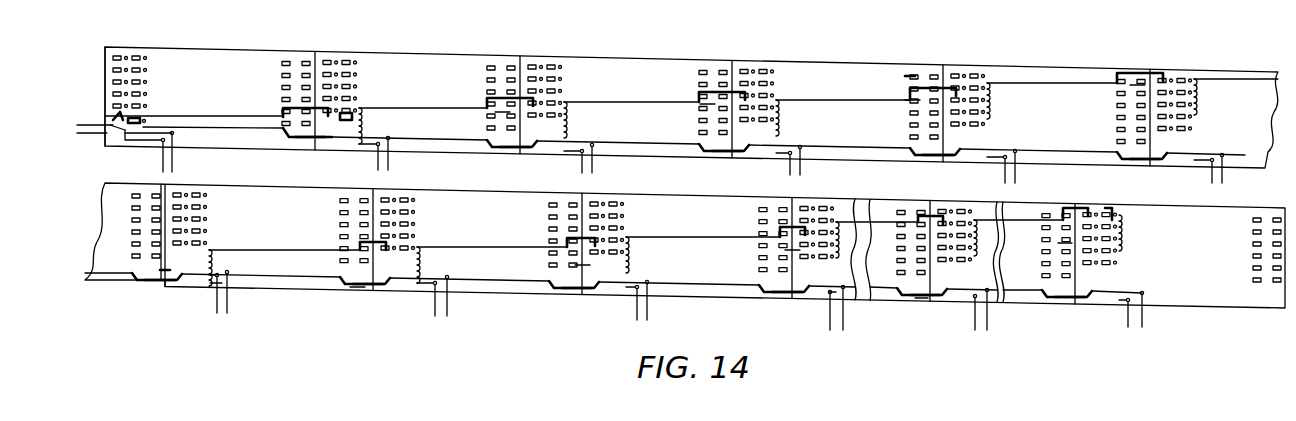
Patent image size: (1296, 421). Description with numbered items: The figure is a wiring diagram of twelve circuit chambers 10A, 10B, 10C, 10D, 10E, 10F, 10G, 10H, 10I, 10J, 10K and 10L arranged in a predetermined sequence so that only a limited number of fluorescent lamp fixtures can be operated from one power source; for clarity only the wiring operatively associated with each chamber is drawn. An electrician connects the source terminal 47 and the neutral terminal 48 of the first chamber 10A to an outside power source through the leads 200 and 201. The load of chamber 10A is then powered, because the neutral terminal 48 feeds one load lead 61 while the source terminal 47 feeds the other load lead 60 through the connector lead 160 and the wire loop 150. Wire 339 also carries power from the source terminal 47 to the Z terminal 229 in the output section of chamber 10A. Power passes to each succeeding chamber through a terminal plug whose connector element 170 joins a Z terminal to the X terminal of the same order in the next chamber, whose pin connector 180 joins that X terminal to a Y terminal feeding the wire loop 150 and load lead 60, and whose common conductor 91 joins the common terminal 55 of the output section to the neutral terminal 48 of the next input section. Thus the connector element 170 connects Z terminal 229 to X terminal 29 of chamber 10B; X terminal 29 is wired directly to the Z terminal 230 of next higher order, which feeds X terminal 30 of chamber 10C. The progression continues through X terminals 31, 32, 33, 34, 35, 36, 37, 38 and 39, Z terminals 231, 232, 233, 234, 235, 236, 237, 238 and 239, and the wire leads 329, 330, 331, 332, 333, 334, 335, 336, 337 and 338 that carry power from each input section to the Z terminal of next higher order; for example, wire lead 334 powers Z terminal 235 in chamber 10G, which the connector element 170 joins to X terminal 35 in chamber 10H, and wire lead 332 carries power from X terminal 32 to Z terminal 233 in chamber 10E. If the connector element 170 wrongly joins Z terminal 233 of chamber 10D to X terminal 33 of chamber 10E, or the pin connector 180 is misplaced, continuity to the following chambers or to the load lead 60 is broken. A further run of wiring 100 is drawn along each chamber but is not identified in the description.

The circuit chamber 10A is at (134, 41).
The circuit chamber 10B is at (340, 46).
The circuit chamber 10C is at (546, 50).
The circuit chamber 10D is at (765, 55).
The circuit chamber 10E is at (978, 59).
The circuit chamber 10F is at (1165, 63).
The circuit chamber 10G is at (181, 294).
The circuit chamber 10H is at (383, 296).
The circuit chamber 10I is at (601, 300).
The circuit chamber 10J is at (935, 308).
The circuit chamber 10K is at (1073, 311).
The circuit chamber 10L is at (1268, 315).
The X terminal 29 is at (283, 129).
The X terminal 30 is at (500, 112).
The X terminal 31 is at (700, 102).
The X terminal 32 is at (908, 100).
The X terminal 33 is at (953, 70).
The X terminal 34 is at (216, 283).
The X terminal 35 is at (355, 287).
The X terminal 36 is at (582, 265).
The X terminal 37 is at (790, 250).
The X terminal 38 is at (920, 298).
The X terminal 39 is at (1062, 243).
The source terminal 47 is at (118, 130).
The neutral terminal 48 is at (127, 128).
The common terminal 55 is at (282, 140).
The load lead 60 is at (173, 165).
The load lead 61 is at (165, 157).
The common conductor 91 is at (300, 150).
The common conductor 100 is at (236, 135).
The wire loop 150 is at (565, 112).
The connector lead 160 is at (116, 115).
The connector element 170 is at (290, 75).
The pin connector 180 is at (353, 106).
The lead 200 is at (90, 124).
The lead 201 is at (90, 134).
The Z terminal 229 is at (284, 108).
The Z terminal 230 is at (487, 100).
The Z terminal 231 is at (699, 92).
The Z terminal 232 is at (905, 88).
The Z terminal 233 is at (910, 76).
The Z terminal 234 is at (165, 270).
The Z terminal 235 is at (358, 245).
The Z terminal 236 is at (565, 240).
The Z terminal 237 is at (780, 228).
The Z terminal 238 is at (922, 222).
The Z terminal 239 is at (1080, 208).
The wire lead 329 is at (390, 106).
The wire lead 330 is at (605, 102).
The wire lead 331 is at (800, 100).
The wire lead 332 is at (1020, 82).
The wire lead 333 is at (1220, 79).
The wire lead 334 is at (258, 250).
The wire lead 335 is at (482, 247).
The wire lead 336 is at (685, 237).
The wire lead 337 is at (878, 220).
The wire lead 338 is at (1060, 210).
The wire 339 is at (173, 115).